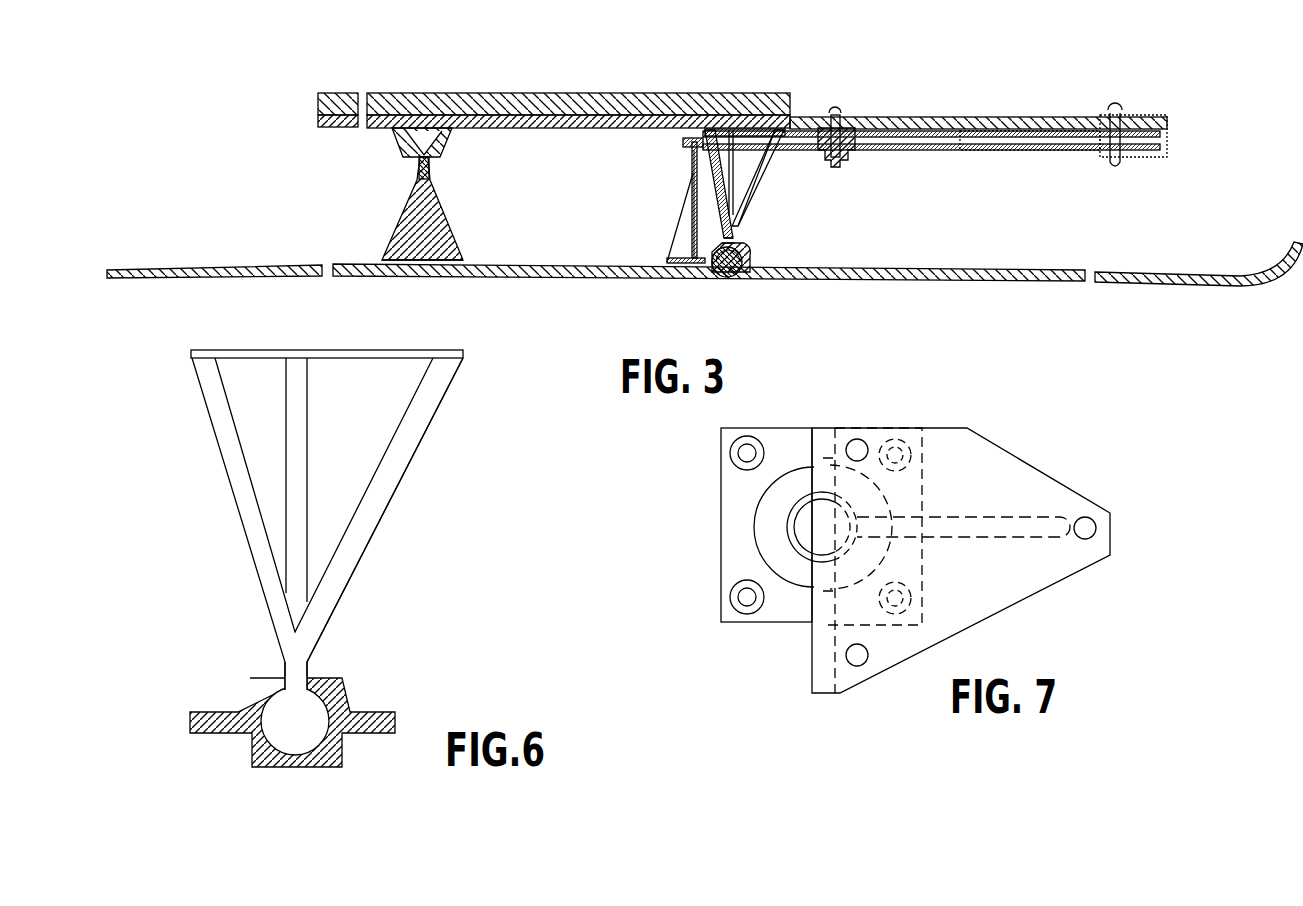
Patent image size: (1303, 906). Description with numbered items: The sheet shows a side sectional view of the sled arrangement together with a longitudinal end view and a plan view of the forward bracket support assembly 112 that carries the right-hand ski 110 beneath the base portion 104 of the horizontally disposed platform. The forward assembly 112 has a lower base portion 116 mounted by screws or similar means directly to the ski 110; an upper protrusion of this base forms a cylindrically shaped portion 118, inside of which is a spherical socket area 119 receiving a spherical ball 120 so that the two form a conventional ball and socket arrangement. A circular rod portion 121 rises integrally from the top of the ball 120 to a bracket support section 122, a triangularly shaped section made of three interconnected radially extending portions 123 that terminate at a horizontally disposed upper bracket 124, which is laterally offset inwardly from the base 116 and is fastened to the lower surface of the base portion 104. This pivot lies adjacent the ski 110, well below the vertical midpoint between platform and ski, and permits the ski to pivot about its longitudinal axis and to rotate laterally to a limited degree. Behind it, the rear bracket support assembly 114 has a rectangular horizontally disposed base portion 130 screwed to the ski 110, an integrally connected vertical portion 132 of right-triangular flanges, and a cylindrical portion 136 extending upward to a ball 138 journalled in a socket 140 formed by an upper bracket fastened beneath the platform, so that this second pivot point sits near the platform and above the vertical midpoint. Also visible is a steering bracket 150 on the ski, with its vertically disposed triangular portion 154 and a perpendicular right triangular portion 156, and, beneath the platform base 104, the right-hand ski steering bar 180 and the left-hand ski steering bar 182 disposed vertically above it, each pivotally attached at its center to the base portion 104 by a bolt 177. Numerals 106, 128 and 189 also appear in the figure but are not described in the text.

In FIG. 3, the base portion 104 is at (337, 128).
In FIG. 3, the upper panel 106 is at (339, 93).
In FIG. 3, the right-hand ski 110 is at (347, 278).
In FIG. 3, the forward bracket support assembly 112 is at (750, 187).
In FIG. 6, the forward bracket support assembly 112 is at (348, 546).
In FIG. 7, the forward bracket support assembly 112 is at (872, 541).
In FIG. 3, the rear bracket support assembly 114 is at (424, 194).
In FIG. 3, the lower base portion 116 is at (740, 253).
In FIG. 6, the lower base portion 116 is at (307, 706).
In FIG. 7, the lower base portion 116 is at (765, 625).
In FIG. 3, the cylindrically shaped portion 118 is at (710, 248).
In FIG. 6, the cylindrically shaped portion 118 is at (333, 678).
In FIG. 3, the socket area 119 is at (737, 235).
In FIG. 6, the socket area 119 is at (270, 673).
In FIG. 3, the spherical ball 120 is at (723, 280).
In FIG. 6, the spherical ball 120 is at (275, 735).
In FIG. 3, the circular rod portion 121 is at (737, 232).
In FIG. 6, the circular rod portion 121 is at (313, 665).
In FIG. 3, the bracket support section 122 is at (765, 183).
In FIG. 6, the bracket support section 122 is at (373, 553).
In FIG. 3, the radially extending portions 123 is at (755, 128).
In FIG. 6, the radially extending portions 123 is at (235, 433).
In FIG. 3, the upper bracket 124 is at (800, 130).
In FIG. 6, the upper bracket 124 is at (412, 353).
In FIG. 7, the upper bracket 124 is at (1067, 482).
In FIG. 7, the slot 128 is at (1003, 518).
In FIG. 3, the base portion 130 is at (463, 260).
In FIG. 3, the vertical portion 132 is at (452, 222).
In FIG. 3, the cylindrical portion 136 is at (417, 163).
In FIG. 3, the ball 138 is at (417, 162).
In FIG. 3, the socket 140 is at (433, 163).
In FIG. 3, the steering bracket 150 is at (680, 183).
In FIG. 3, the triangular portion 154 is at (692, 203).
In FIG. 3, the right triangular portion 156 is at (680, 230).
In FIG. 3, the bolt 177 is at (838, 107).
In FIG. 3, the right-hand ski steering bar 180 is at (898, 150).
In FIG. 3, the left-hand ski steering bar 182 is at (953, 143).
In FIG. 3, the upper layer 189 is at (880, 120).